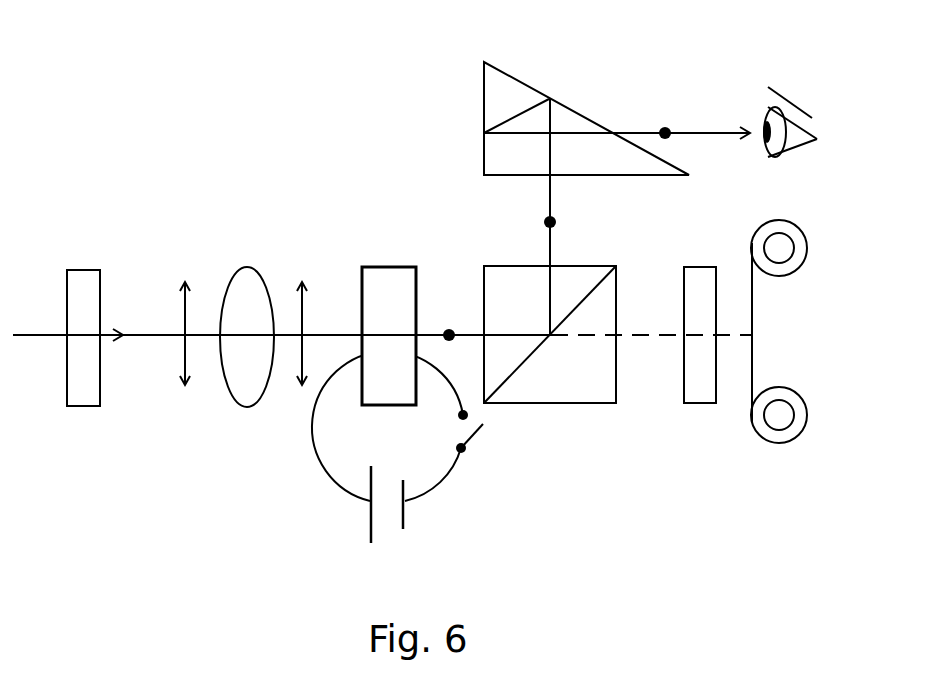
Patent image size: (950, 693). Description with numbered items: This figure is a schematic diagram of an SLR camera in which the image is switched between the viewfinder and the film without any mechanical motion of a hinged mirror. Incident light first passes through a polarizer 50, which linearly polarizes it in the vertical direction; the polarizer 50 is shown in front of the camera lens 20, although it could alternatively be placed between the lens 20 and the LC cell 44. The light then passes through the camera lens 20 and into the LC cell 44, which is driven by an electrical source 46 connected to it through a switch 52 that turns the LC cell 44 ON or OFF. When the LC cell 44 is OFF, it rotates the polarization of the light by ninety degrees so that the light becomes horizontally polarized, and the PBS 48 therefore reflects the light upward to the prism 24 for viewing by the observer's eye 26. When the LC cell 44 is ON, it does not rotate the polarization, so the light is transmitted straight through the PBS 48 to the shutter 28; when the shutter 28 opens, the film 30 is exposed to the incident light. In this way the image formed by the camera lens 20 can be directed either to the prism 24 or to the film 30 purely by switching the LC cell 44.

The camera lens 20 is at (247, 275).
The prism 24 is at (510, 74).
The eye of observer 26 is at (803, 142).
The shutter 28 is at (693, 273).
The film 30 is at (752, 373).
The LC cell 44 is at (385, 273).
The electrical source 46 is at (368, 518).
The PBS 48 is at (585, 272).
The polarizer 50 is at (83, 275).
The switch 52 is at (472, 440).